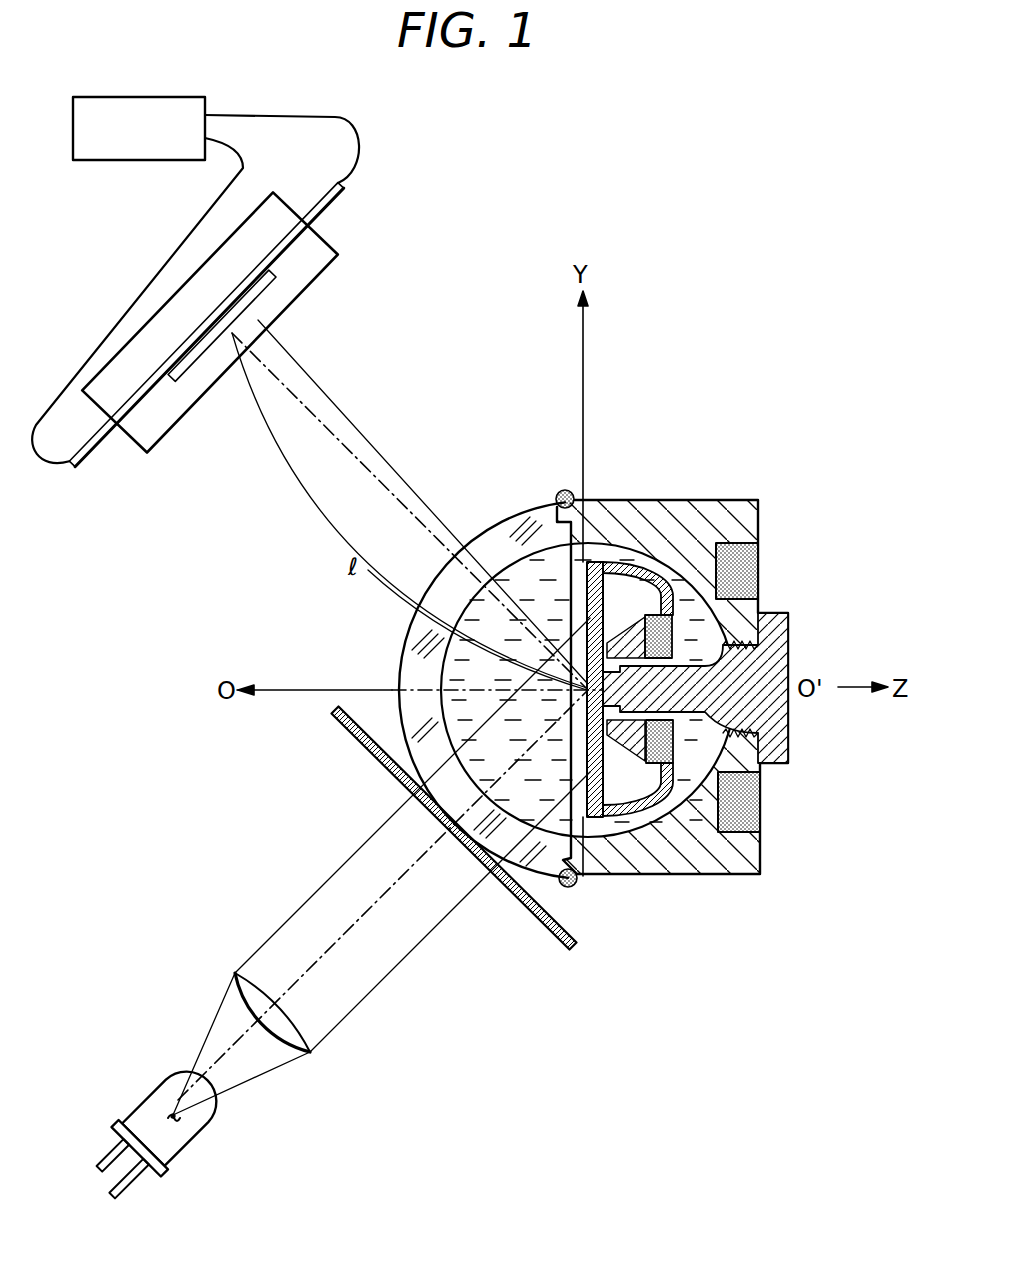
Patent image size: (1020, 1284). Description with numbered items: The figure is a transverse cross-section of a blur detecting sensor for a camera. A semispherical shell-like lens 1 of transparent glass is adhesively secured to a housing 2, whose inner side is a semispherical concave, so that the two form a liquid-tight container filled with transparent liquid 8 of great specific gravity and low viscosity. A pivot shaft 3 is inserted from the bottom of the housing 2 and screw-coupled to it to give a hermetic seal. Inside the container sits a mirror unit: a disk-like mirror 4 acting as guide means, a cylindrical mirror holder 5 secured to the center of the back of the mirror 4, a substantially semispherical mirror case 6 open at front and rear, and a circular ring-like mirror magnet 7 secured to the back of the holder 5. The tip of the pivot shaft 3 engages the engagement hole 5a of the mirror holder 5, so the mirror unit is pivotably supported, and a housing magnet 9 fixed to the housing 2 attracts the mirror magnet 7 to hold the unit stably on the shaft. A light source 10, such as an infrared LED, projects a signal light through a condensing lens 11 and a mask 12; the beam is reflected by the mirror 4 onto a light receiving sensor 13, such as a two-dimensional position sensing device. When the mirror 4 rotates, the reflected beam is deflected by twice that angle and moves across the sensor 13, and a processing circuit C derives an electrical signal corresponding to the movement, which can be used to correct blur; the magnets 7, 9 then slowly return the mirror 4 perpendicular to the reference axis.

The semispherical shell-like lens 1 is at (543, 513).
The housing 2 is at (665, 522).
The pivot shaft 3 is at (786, 616).
The disk-like mirror 4 is at (600, 560).
The mirror holder 5 is at (623, 795).
The engagement hole 5a is at (600, 815).
The mirror case 6 is at (660, 765).
The mirror magnet 7 is at (676, 782).
The transparent liquid 8 is at (703, 772).
The housing magnet 9 is at (760, 550).
The light source 10 is at (190, 1128).
The condensing lens 11 is at (309, 1050).
The mask 12 is at (538, 914).
The light receiving sensor 13 is at (305, 260).
The processing circuit C is at (205, 92).